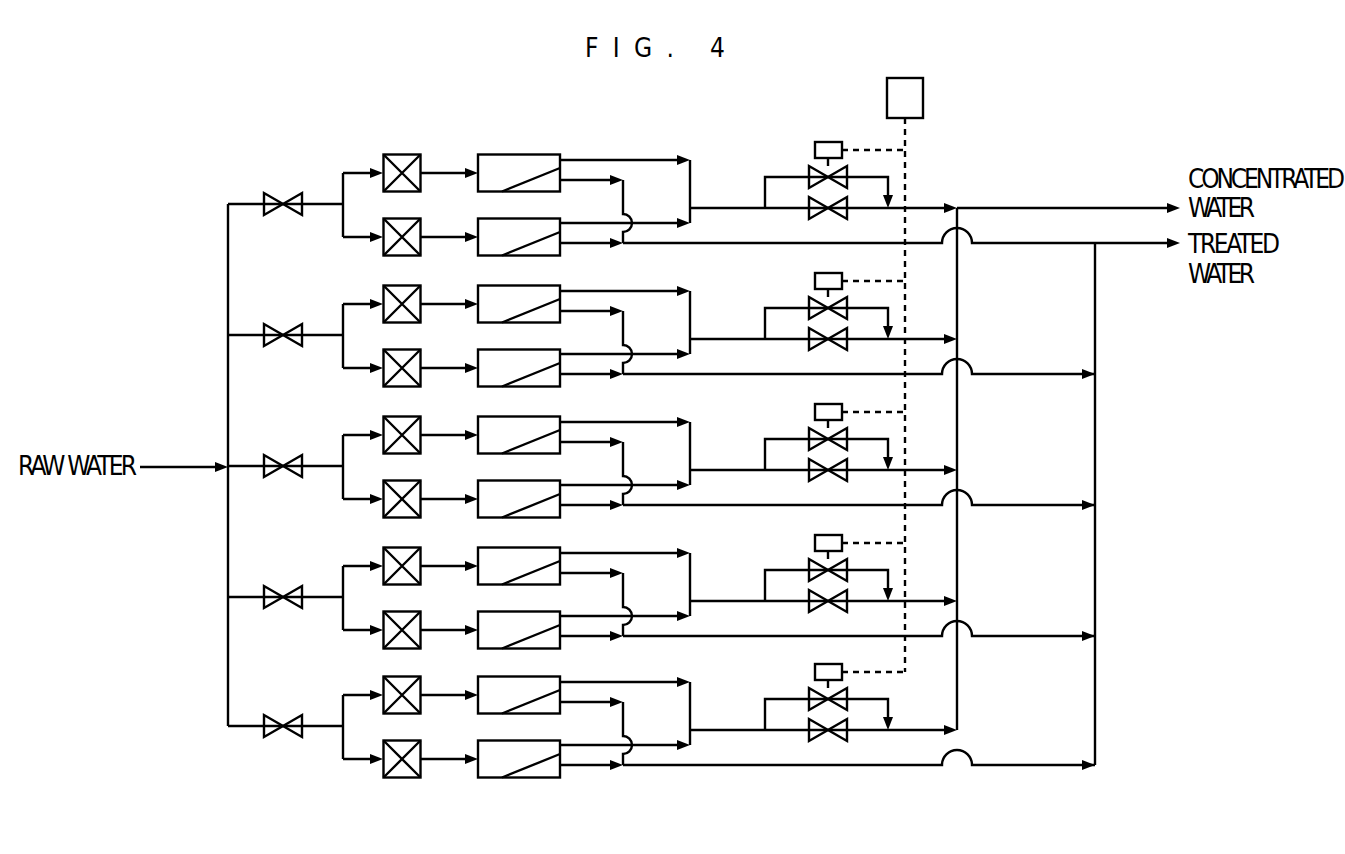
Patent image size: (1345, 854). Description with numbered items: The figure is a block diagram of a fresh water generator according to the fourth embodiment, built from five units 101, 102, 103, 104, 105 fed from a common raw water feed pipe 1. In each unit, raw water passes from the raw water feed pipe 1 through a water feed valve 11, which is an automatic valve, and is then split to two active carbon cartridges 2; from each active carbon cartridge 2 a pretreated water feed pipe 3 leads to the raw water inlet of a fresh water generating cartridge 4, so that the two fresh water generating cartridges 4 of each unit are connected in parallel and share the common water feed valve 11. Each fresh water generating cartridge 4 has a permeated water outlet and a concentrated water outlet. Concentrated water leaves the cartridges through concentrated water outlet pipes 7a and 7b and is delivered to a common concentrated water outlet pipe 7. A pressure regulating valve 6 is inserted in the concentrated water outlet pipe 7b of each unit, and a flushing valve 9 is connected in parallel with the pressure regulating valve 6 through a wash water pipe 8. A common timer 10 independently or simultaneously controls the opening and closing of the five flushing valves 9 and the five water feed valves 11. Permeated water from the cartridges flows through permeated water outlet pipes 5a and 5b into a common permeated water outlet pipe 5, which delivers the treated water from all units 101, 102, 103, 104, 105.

The raw water feed pipe 1 is at (168, 463).
The active carbon cartridge 2 is at (387, 474).
The pretreated water feed pipe 3 is at (449, 484).
The fresh water generating cartridge 4 is at (504, 444).
The permeated water outlet pipe 5 is at (1138, 248).
The permeated water outlet pipe 5a is at (596, 470).
The permeated water outlet pipe 5b is at (827, 512).
The pressure regulating valve 6 is at (811, 478).
The concentrated water outlet pipe 7 is at (1141, 206).
The concentrated water outlet pipe 7a is at (625, 401).
The concentrated water outlet pipe 7b is at (625, 455).
The wash water pipe 8 is at (809, 452).
The flushing valve 9 is at (857, 426).
The common timer 10 is at (925, 92).
The water feed valve 11 is at (283, 487).
The unit 101 is at (334, 166).
The unit 102 is at (334, 297).
The unit 103 is at (334, 428).
The unit 104 is at (334, 559).
The unit 105 is at (334, 688).